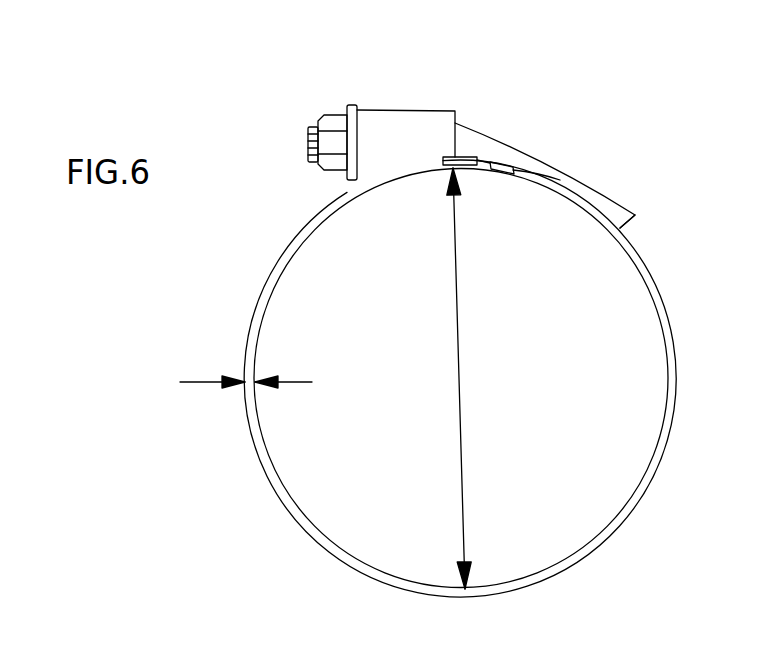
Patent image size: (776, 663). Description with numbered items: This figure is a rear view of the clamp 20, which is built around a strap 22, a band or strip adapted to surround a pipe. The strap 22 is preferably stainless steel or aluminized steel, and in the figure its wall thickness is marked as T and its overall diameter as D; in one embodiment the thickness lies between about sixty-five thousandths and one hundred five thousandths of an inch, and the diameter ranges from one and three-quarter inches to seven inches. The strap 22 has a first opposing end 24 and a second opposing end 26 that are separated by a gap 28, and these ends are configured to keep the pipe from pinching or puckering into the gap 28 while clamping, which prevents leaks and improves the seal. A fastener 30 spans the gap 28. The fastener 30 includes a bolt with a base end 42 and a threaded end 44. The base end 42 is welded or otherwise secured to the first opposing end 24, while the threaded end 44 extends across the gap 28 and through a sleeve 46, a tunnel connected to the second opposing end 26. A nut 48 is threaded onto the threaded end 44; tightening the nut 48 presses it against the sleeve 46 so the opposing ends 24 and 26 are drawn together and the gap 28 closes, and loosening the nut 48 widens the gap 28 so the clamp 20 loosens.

The clamp 20 is at (236, 166).
The strap 22 is at (677, 348).
The first opposing end 24 is at (518, 178).
The second opposing end 26 is at (470, 165).
The gap 28 is at (485, 165).
The fastener 30 is at (510, 137).
The base end 42 is at (590, 180).
The threaded end 44 is at (308, 135).
The sleeve 46 is at (403, 110).
The nut 48 is at (333, 117).